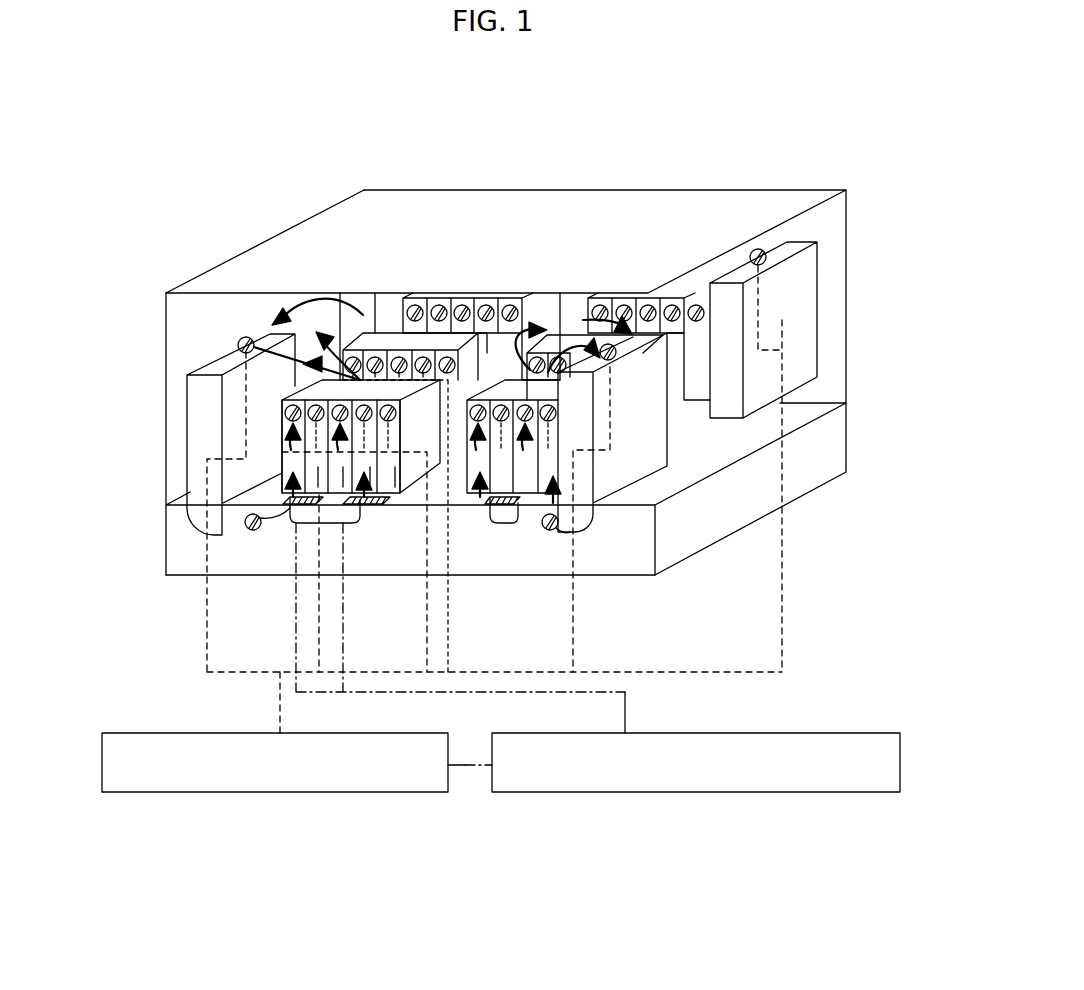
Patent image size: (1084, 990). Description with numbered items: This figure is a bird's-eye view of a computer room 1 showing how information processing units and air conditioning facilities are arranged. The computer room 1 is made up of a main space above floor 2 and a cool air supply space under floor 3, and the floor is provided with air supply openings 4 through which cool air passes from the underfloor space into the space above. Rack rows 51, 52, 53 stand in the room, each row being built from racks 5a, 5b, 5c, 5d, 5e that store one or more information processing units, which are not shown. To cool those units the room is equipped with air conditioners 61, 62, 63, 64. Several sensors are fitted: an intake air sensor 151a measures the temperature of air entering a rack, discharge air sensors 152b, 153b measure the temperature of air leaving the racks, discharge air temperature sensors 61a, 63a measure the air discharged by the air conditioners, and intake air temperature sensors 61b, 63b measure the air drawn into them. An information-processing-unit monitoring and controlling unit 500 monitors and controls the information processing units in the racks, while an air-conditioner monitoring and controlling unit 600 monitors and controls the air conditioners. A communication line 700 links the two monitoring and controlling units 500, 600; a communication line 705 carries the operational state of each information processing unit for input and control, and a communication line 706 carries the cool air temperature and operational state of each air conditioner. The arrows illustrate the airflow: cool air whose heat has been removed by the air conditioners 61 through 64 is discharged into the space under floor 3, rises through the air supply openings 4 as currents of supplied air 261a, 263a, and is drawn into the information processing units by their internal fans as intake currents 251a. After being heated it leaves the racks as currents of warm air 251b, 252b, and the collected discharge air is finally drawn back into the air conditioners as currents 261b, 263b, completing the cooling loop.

The computer room 1 is at (603, 207).
The main space above floor 2 is at (192, 325).
The cool air supply space under floor 3 is at (183, 540).
The air supply openings 4 is at (512, 497).
The rack 5a is at (293, 500).
The rack 5b is at (320, 495).
The rack 5c is at (343, 493).
The rack 5d is at (347, 480).
The rack 5e is at (372, 470).
The rack row 51 is at (410, 465).
The rack row 52 is at (530, 308).
The rack row 53 is at (557, 343).
The air conditioner 61 is at (200, 383).
The discharge air temperature sensor 61a is at (253, 527).
The intake air temperature sensor 61b is at (247, 337).
The air conditioner 62 is at (380, 367).
The air conditioner 63 is at (648, 445).
The discharge air temperature sensor 63a is at (545, 532).
The intake air temperature sensor 63b is at (613, 340).
The air conditioner 64 is at (810, 277).
The intake air sensor 151a is at (292, 415).
The discharge air sensor 152b is at (437, 305).
The discharge air sensor 153b is at (487, 353).
The current of air taken into information processing unit 251a is at (293, 445).
The current of warm air 251b is at (325, 375).
The current of warm air 252b is at (363, 300).
The current of supplied air 261a is at (292, 518).
The current of discharge air drawn into air conditioner 261b is at (320, 305).
The current of supplied air 263a is at (578, 535).
The current of discharge air drawn into air conditioner 263b is at (605, 345).
The information-processing-unit monitoring and controlling unit 500 is at (752, 792).
The air-conditioner monitoring and controlling unit 600 is at (235, 792).
The communication line 700 is at (466, 766).
The communication line 705 is at (627, 710).
The communication line 706 is at (242, 672).